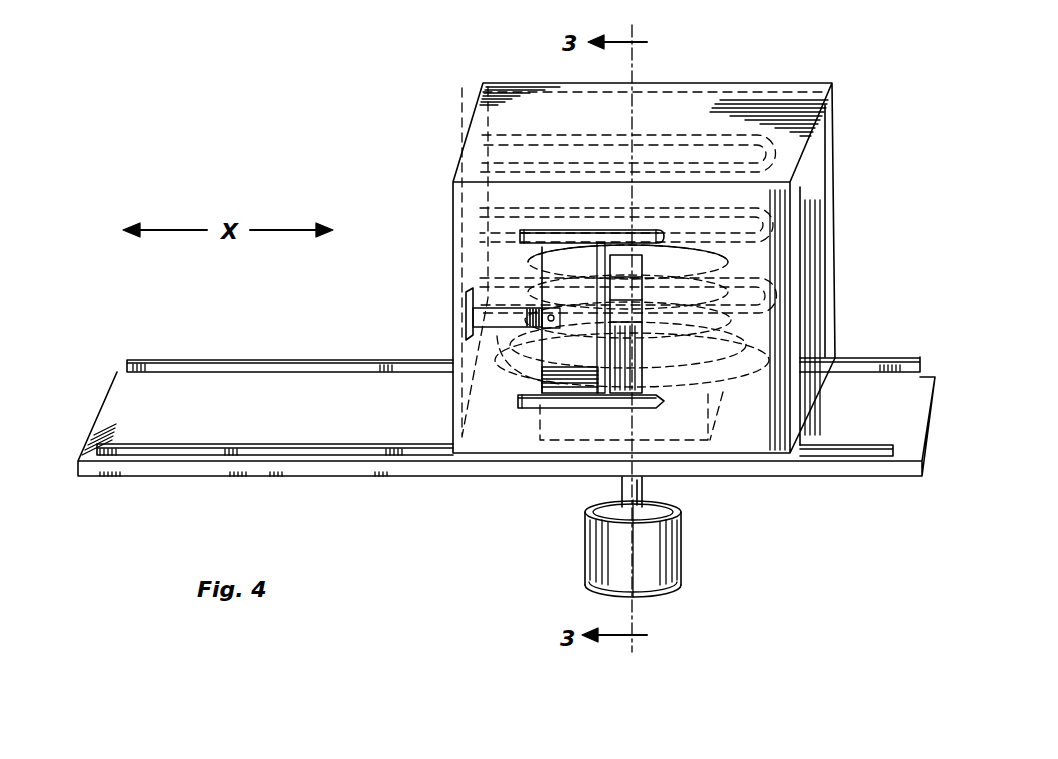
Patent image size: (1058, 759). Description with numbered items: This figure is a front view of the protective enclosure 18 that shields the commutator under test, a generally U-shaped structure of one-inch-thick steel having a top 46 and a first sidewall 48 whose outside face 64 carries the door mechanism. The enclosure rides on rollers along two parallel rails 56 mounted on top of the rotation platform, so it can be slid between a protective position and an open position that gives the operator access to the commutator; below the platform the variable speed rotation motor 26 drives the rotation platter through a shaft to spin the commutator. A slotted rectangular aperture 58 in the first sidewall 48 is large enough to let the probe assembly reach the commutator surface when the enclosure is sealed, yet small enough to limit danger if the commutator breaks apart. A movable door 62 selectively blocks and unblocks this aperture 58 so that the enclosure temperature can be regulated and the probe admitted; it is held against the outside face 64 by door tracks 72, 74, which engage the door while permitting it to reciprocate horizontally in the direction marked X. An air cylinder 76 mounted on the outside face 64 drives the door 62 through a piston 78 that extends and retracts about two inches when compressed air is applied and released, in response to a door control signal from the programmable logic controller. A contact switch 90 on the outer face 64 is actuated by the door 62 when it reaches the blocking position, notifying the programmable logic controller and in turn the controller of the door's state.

The protective enclosure 18 is at (620, 262).
The variable speed rotation motor 26 is at (585, 565).
The top 46 is at (547, 103).
The first sidewall 48 is at (582, 197).
The parallel rails 56 is at (263, 357).
The slotted rectangular aperture 58 is at (632, 275).
The movable door 62 is at (570, 270).
The outside face 64 is at (622, 430).
The door track 72 is at (558, 233).
The door track 74 is at (527, 405).
The air cylinder 76 is at (466, 312).
The piston 78 is at (527, 332).
The contact switch 90 is at (662, 400).